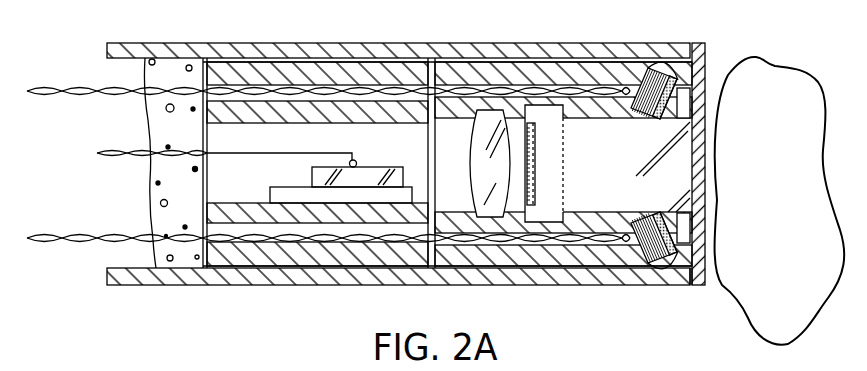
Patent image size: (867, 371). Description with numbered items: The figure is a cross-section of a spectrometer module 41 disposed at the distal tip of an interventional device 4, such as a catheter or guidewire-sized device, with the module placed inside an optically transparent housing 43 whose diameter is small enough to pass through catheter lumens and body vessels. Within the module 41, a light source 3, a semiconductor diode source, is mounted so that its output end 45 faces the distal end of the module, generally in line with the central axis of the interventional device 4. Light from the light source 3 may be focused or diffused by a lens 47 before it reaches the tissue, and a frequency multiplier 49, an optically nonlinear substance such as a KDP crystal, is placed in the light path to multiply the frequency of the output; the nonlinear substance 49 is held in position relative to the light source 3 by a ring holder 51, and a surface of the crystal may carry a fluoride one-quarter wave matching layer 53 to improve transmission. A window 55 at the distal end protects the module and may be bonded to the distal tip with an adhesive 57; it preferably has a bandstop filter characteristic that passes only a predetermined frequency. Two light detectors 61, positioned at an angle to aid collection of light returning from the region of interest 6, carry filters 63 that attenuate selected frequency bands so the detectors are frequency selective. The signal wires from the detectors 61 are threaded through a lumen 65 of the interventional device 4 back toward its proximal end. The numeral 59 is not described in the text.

The interventional device 4 is at (398, 166).
The housing 43 is at (604, 60).
The lower housing wall 59 is at (590, 288).
The spectrometer module 41 is at (531, 67).
The adhesive 57 is at (690, 286).
The window 55 is at (697, 284).
The lumen 65 is at (127, 255).
The output end 45 is at (413, 175).
The light source 3 is at (312, 172).
The lens 47 is at (487, 190).
The ring holder 51 is at (553, 212).
The one-quarter wave matching layer 53 is at (535, 168).
The frequency multiplier 49 is at (659, 184).
The light detector 61 is at (638, 112).
The filter 63 is at (680, 84).
The region of interest 6 is at (787, 216).